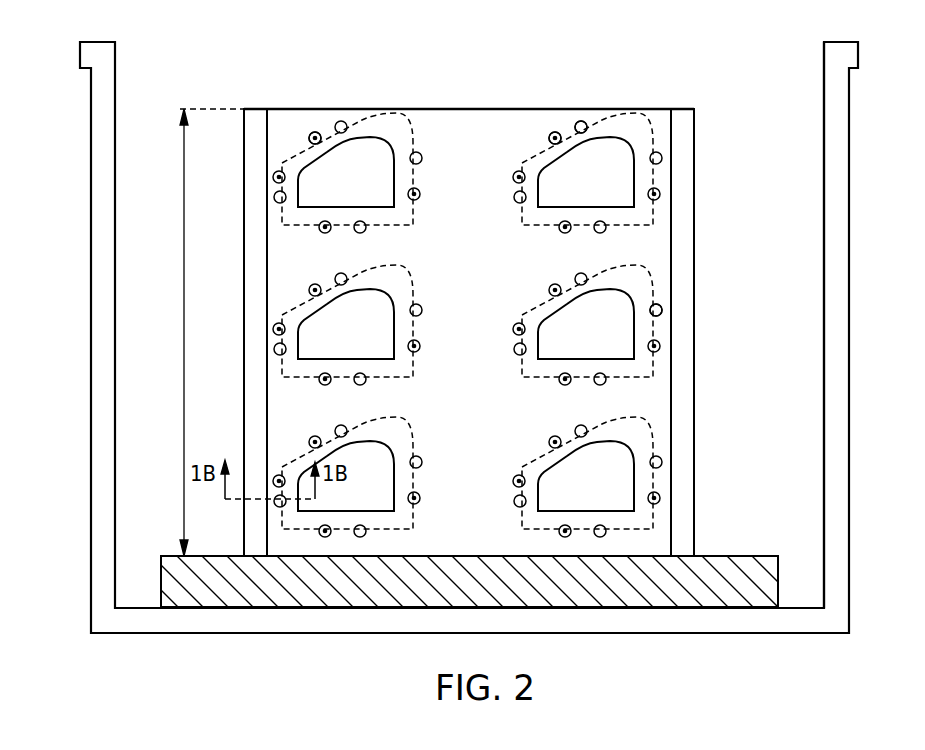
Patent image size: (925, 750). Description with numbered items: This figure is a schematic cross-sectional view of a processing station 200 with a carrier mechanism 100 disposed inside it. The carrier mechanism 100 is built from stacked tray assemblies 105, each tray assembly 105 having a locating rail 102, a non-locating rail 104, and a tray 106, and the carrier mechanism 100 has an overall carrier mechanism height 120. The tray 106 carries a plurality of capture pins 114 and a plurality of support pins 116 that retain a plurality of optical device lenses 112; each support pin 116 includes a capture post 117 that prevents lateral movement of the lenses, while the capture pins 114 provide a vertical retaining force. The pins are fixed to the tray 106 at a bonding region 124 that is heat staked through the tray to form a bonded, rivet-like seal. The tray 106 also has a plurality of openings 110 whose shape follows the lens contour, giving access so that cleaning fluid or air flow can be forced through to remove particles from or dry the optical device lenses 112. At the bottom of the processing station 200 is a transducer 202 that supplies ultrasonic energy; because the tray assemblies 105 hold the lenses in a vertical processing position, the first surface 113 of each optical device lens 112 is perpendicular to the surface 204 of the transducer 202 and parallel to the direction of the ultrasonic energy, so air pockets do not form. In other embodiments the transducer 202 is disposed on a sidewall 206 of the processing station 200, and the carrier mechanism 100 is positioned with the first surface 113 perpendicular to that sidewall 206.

The carrier mechanism 100 is at (685, 100).
The locating rail 102 is at (695, 145).
The non-locating rail 104 is at (258, 108).
The tray assembly 105 is at (728, 281).
The tray 106 is at (460, 108).
The openings 110 is at (387, 138).
The optical device lenses 112 is at (332, 189).
The first surface 113 is at (366, 154).
The capture pins 114 is at (581, 121).
The support pins 116 is at (551, 134).
The capture post 117 is at (318, 132).
The carrier mechanism height 120 is at (184, 193).
The bonding region 124 is at (662, 310).
The processing station 200 is at (717, 633).
The transducer 202 is at (778, 573).
The surface of the transducer 204 is at (736, 556).
The sidewall 206 is at (823, 427).